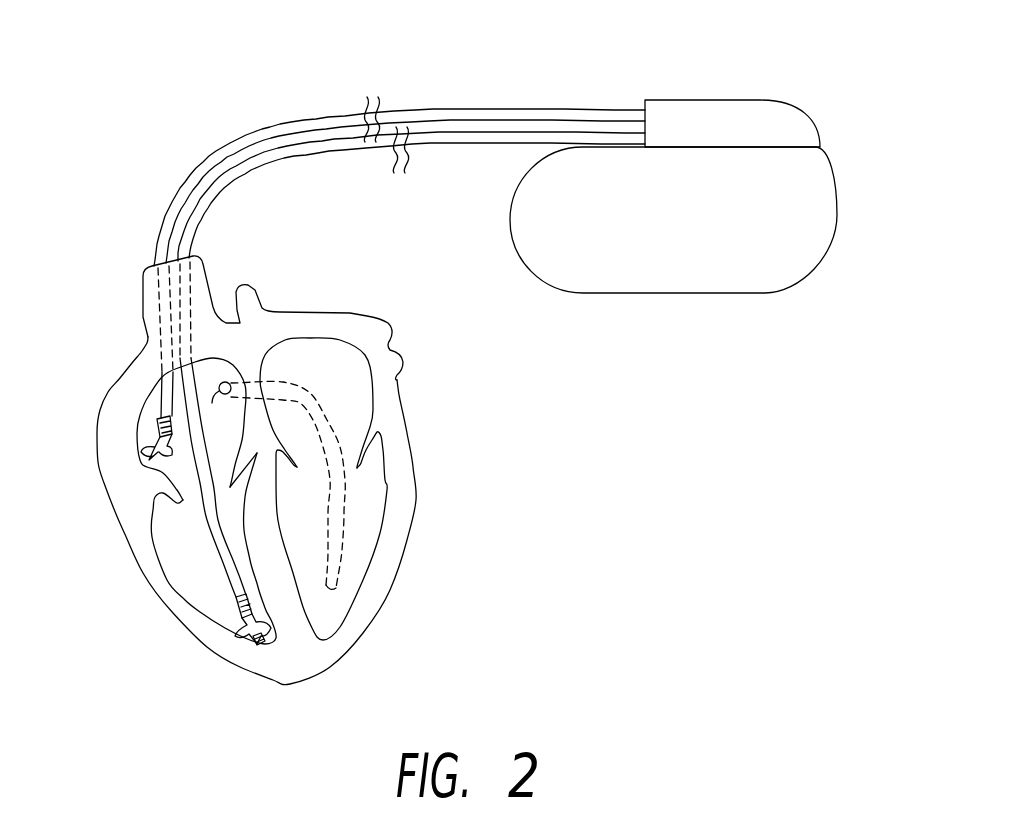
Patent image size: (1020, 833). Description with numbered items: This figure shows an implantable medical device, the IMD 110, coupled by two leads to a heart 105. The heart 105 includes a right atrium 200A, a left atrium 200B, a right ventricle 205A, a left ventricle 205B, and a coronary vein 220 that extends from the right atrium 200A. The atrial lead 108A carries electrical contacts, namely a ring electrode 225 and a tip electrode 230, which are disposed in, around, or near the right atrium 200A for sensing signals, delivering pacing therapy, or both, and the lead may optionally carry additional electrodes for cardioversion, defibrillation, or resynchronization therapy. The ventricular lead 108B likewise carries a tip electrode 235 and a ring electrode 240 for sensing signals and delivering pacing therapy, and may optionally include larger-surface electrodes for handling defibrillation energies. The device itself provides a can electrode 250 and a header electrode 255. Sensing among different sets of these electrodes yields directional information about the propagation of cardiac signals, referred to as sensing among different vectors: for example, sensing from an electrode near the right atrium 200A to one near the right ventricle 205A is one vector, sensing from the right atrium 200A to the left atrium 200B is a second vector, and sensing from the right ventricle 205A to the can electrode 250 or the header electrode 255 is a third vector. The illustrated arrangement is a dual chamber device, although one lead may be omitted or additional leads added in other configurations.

The IMD 110 is at (705, 150).
The header electrode 255 is at (810, 117).
The can electrode 250 is at (837, 191).
The atrial lead 108A is at (298, 122).
The ventricular lead 108B is at (315, 168).
The heart 105 is at (416, 498).
The right atrium 200A is at (165, 465).
The left atrium 200B is at (352, 385).
The right ventricle 205A is at (187, 537).
The left ventricle 205B is at (358, 555).
The ring electrode 225 is at (157, 427).
The tip electrode 230 is at (141, 455).
The tip electrode 235 is at (258, 645).
The ring electrode 240 is at (236, 610).
The coronary vein 220 is at (275, 485).